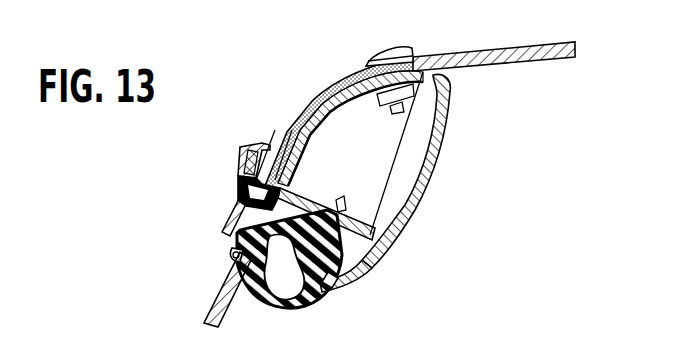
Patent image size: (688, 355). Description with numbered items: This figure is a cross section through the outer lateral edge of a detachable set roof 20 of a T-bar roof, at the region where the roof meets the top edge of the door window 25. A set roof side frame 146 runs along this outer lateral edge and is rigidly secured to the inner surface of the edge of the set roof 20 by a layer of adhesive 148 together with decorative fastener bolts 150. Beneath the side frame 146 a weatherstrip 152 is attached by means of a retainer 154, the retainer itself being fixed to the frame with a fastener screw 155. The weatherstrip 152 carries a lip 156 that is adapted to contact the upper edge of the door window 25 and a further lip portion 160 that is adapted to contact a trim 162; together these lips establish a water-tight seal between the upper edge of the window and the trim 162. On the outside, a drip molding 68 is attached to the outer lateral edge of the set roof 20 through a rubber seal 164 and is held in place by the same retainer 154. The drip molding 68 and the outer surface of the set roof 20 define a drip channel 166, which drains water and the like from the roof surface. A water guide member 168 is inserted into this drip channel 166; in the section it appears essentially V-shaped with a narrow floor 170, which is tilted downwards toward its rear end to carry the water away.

The set roof 20 is at (503, 44).
The door window 25 is at (215, 302).
The drip molding 68 is at (240, 152).
The set roof side frame 146 is at (372, 140).
The layer of adhesive 148 is at (335, 95).
The decorative fastener bolts 150 is at (392, 48).
The weatherstrip 152 is at (287, 302).
The retainer 154 is at (357, 243).
The fastener screw 155 is at (338, 205).
The lip 156 is at (232, 253).
The lip portion 160 is at (330, 292).
The trim 162 is at (427, 200).
The rubber seal 164 is at (235, 195).
The drip channel 166 is at (283, 120).
The water guide member 168 is at (250, 148).
The narrow floor 170 is at (240, 176).